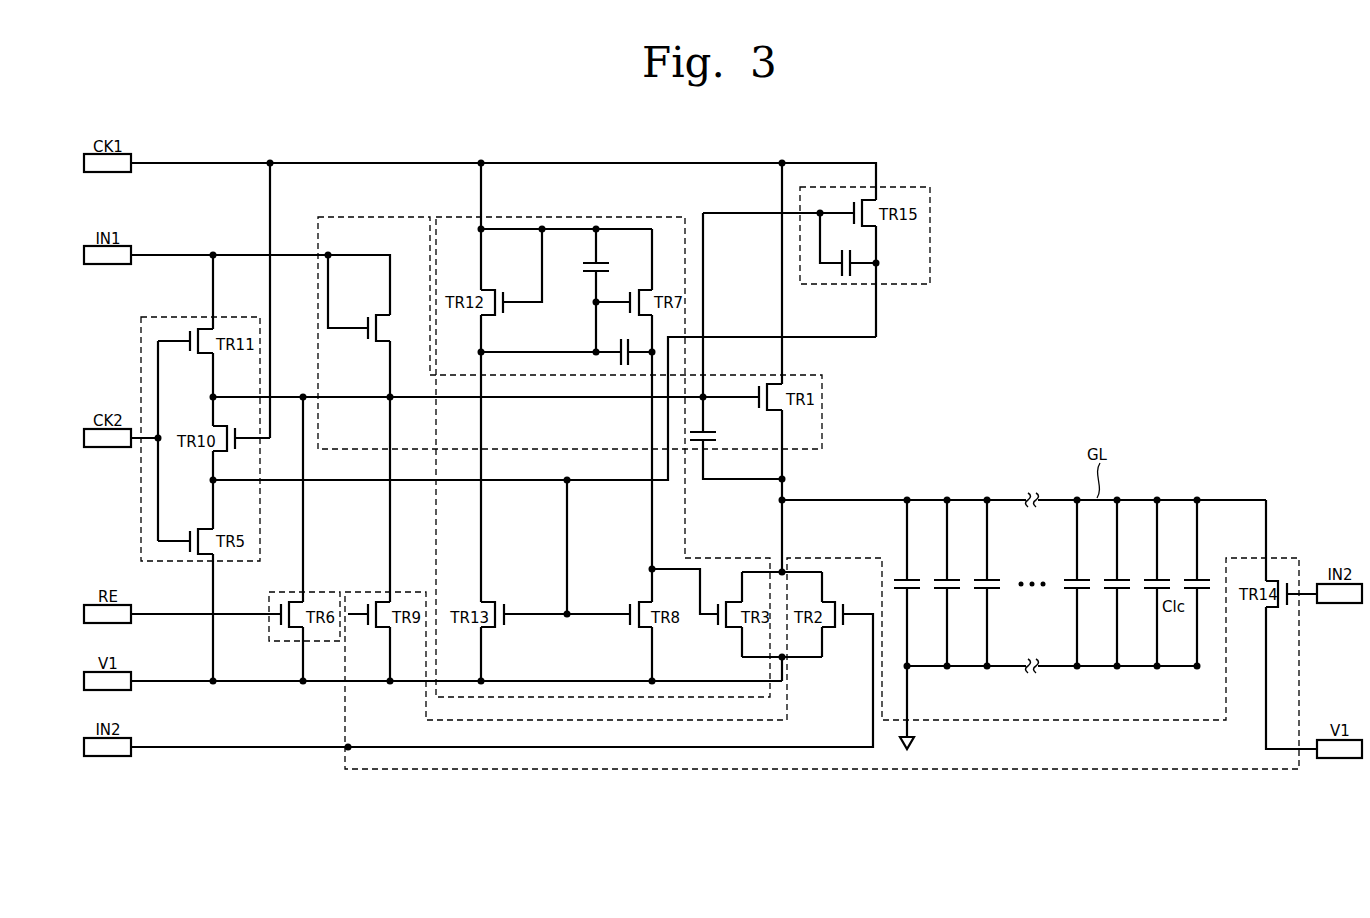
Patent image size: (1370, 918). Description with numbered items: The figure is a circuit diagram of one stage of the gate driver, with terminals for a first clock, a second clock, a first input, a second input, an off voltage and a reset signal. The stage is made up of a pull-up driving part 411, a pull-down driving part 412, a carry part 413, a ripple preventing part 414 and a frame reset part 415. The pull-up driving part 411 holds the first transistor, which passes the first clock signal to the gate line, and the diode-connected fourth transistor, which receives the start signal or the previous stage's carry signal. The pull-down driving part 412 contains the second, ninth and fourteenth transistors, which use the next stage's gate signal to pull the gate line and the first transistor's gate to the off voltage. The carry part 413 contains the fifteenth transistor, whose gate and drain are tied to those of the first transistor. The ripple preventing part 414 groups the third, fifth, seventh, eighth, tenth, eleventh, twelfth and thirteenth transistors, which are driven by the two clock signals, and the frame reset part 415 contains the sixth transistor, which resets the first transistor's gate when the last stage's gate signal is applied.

The pull-up driving part 411 is at (373, 216).
The pull-down driving part 412 is at (345, 761).
The carry part 413 is at (932, 238).
The ripple preventing part 414 is at (141, 514).
The frame reset part 415 is at (281, 642).